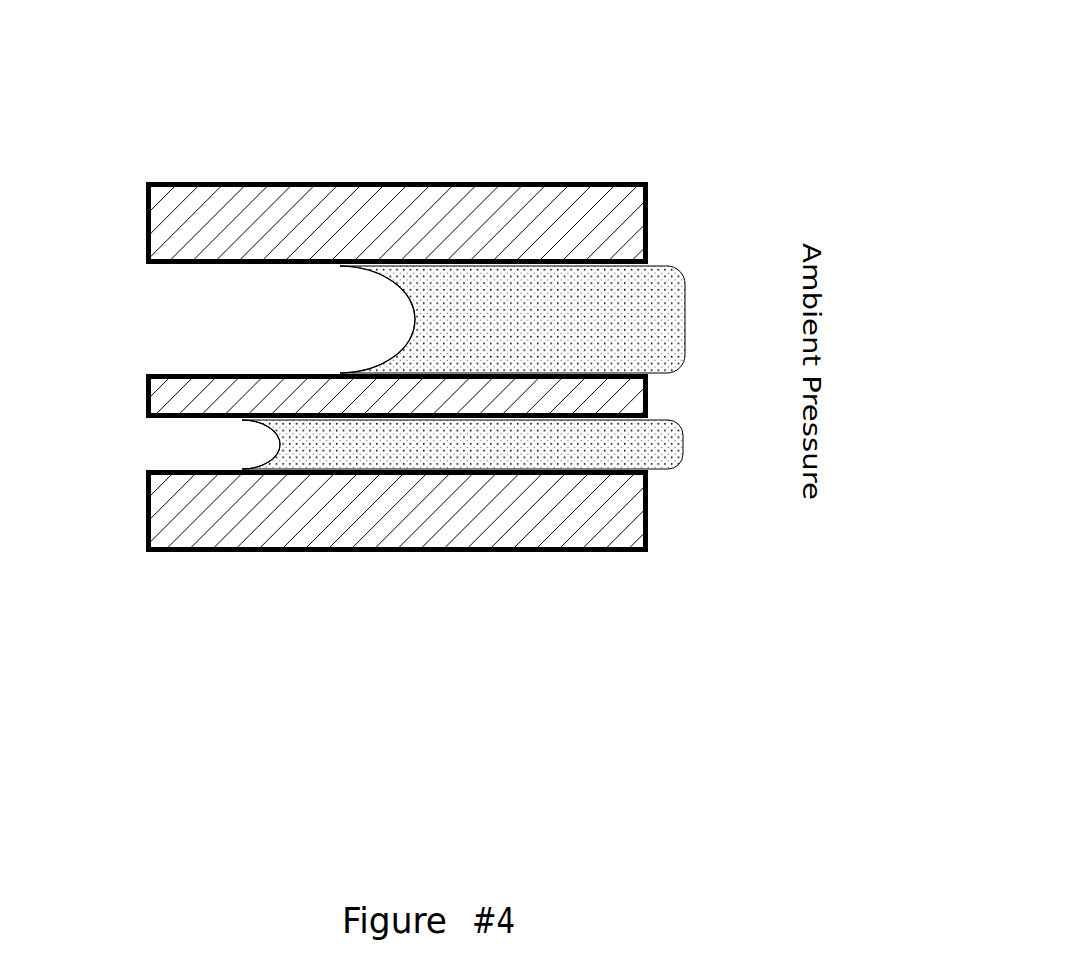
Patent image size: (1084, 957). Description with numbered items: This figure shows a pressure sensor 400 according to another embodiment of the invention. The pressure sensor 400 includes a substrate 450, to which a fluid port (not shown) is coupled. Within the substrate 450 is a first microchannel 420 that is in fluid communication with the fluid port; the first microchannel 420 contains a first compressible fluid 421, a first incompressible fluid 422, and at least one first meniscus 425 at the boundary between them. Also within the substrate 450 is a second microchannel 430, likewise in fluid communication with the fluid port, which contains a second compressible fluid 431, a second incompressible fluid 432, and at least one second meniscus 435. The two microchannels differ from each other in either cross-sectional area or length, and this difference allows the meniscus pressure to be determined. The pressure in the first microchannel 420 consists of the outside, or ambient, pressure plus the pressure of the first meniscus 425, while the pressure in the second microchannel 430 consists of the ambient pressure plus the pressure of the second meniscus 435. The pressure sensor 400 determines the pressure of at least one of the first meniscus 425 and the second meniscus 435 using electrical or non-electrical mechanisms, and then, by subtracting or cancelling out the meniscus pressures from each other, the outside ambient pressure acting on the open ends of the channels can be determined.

The pressure sensor 400 is at (426, 287).
The substrate 450 is at (387, 184).
The first microchannel 420 is at (402, 297).
The first compressible fluid 421 is at (280, 322).
The first incompressible fluid 422 is at (667, 290).
The first meniscus 425 is at (418, 320).
The second microchannel 430 is at (401, 468).
The second compressible fluid 431 is at (217, 447).
The second incompressible fluid 432 is at (665, 447).
The second meniscus 435 is at (282, 445).